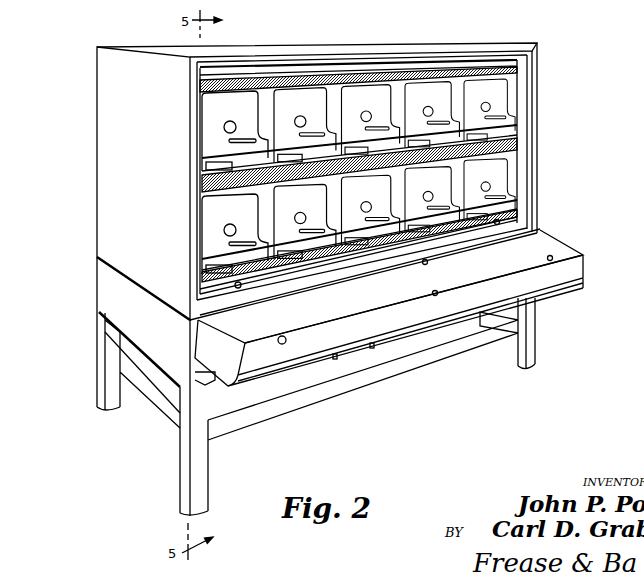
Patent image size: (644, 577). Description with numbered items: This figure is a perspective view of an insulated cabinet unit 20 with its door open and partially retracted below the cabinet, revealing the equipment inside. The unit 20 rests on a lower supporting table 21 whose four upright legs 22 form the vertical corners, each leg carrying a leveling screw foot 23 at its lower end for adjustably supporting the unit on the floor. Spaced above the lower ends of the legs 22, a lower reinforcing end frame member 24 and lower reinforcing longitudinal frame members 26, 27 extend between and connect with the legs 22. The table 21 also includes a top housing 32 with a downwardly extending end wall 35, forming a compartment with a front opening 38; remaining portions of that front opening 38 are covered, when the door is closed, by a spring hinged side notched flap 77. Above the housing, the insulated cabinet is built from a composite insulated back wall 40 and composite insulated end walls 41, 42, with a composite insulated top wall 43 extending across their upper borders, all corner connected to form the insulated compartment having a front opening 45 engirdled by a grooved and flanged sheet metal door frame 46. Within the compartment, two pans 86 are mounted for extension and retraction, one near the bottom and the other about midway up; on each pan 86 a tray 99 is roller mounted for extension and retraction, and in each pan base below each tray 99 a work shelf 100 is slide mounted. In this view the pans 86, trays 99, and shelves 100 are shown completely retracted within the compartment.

The insulated cabinet unit 20 is at (311, 165).
The lower supporting table 21 is at (312, 386).
The upright legs 22 is at (535, 342).
The leveling screw foot 23 is at (533, 366).
The lower reinforcing end frame member 24 is at (147, 405).
The lower reinforcing longitudinal frame member 26 is at (375, 383).
The lower reinforcing longitudinal frame member 27 is at (112, 353).
The top housing 32 is at (108, 287).
The end wall 35 is at (122, 315).
The front opening 38 is at (419, 312).
The composite insulated back wall 40 is at (578, 262).
The composite insulated end wall 41 is at (97, 140).
The composite insulated end wall 42 is at (540, 135).
The composite insulated top wall 43 is at (400, 44).
The front opening 45 is at (505, 80).
The door frame 46 is at (528, 175).
The spring hinged side notched flap 77 is at (203, 378).
The pan 86 is at (217, 173).
The tray 99 is at (241, 185).
The work shelf 100 is at (500, 133).